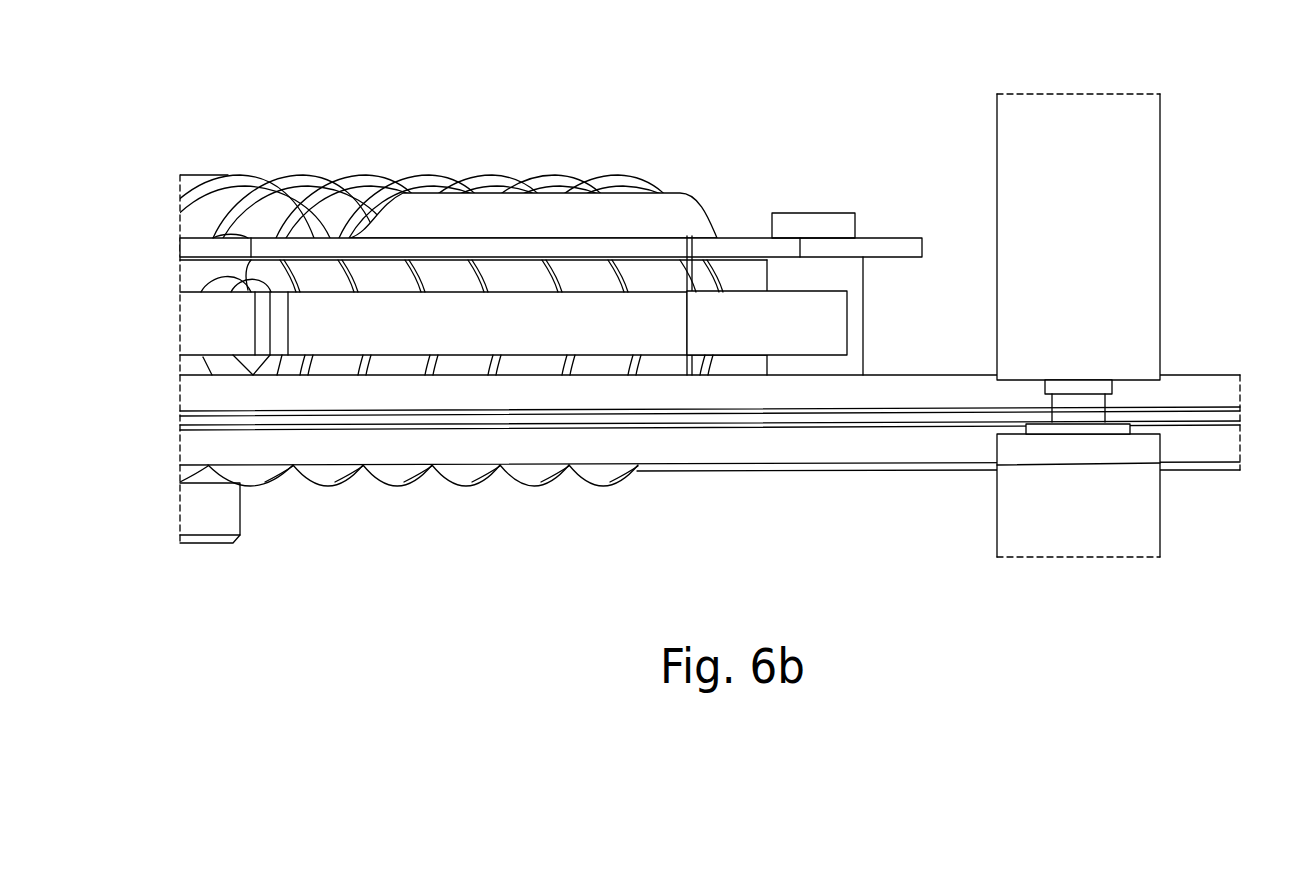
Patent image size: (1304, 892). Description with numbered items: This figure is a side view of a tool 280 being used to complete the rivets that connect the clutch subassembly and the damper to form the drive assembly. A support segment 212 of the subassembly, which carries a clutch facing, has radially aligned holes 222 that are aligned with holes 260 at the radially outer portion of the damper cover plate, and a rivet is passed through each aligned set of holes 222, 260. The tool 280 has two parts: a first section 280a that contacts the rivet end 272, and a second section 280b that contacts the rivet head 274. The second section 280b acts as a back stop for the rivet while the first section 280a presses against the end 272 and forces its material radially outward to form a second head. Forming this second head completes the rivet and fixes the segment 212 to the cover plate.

The support segment 212 is at (1182, 415).
The radially aligned holes 222 is at (710, 468).
The holes 260 is at (1040, 418).
The rivet end 272 is at (1065, 380).
The rivet head 274 is at (1088, 432).
The tool 280 is at (1100, 366).
The first section 280a is at (1133, 184).
The second section 280b is at (1060, 542).